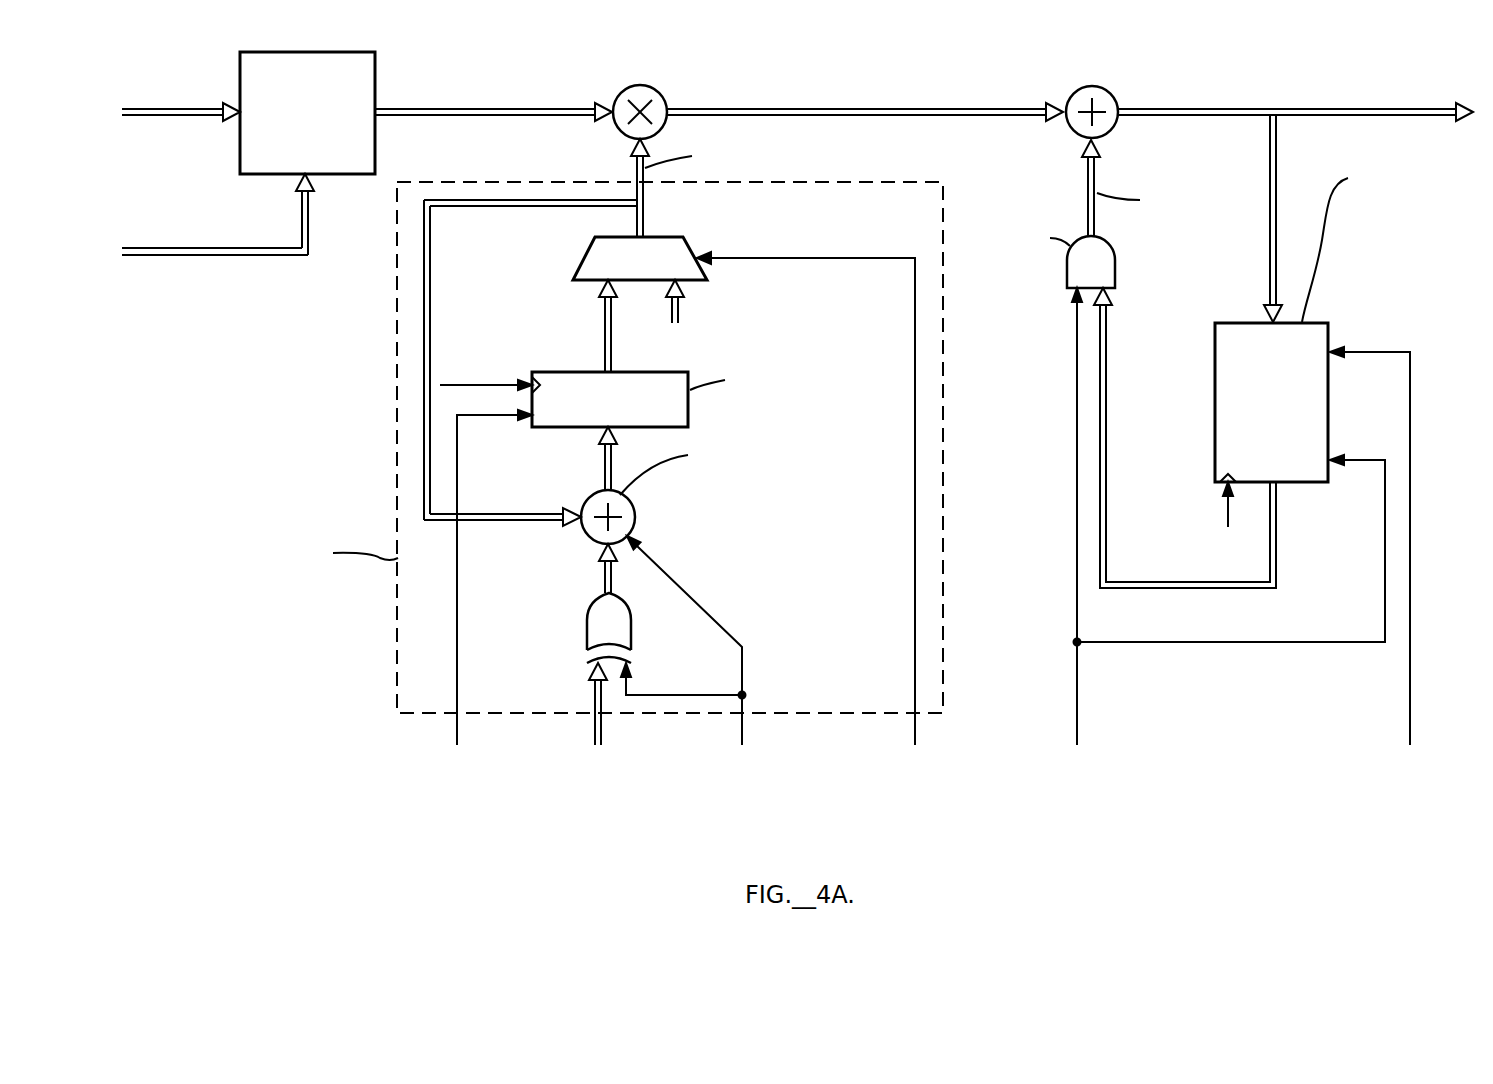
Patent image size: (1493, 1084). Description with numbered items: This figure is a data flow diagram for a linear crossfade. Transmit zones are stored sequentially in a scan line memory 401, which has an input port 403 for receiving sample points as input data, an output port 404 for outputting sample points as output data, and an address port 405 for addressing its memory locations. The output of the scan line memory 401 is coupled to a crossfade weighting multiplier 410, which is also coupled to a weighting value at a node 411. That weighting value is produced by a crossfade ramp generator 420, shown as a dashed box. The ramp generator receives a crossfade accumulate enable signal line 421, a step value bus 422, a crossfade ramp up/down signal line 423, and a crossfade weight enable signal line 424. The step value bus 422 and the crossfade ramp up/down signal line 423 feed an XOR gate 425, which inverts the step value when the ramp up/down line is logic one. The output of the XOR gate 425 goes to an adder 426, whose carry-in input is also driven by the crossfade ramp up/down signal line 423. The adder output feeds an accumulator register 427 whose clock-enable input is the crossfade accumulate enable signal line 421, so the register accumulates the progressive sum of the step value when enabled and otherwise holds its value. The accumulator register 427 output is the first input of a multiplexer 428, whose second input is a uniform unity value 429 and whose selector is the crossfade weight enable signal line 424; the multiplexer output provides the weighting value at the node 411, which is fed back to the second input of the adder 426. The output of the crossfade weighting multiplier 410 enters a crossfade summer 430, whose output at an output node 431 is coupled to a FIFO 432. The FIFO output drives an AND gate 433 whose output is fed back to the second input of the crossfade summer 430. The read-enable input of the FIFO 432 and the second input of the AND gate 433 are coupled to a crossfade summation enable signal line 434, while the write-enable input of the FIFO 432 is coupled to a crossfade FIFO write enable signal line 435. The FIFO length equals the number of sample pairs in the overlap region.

The scan line memory 401 is at (258, 52).
The input port 403 is at (197, 117).
The output port 404 is at (470, 108).
The address port 405 is at (200, 256).
The crossfade weighting multiplier 410 is at (665, 97).
The node 411 is at (636, 160).
The crossfade ramp generator 420 is at (398, 306).
The crossfade accumulate enable signal line 421 is at (480, 638).
The step value bus 422 is at (600, 750).
The crossfade ramp up/down signal line 423 is at (711, 688).
The crossfade weight enable signal line 424 is at (835, 559).
The XOR gate 425 is at (633, 622).
The adder 426 is at (640, 500).
The accumulator register 427 is at (657, 358).
The multiplexer 428 is at (662, 238).
The uniform unity value 429 is at (705, 338).
The crossfade summer 430 is at (1113, 97).
The output node 431 is at (1305, 108).
The FIFO 432 is at (1252, 438).
The AND gate 433 is at (1118, 265).
The crossfade summation enable signal line 434 is at (1201, 577).
The crossfade FIFO write enable signal line 435 is at (1401, 579).